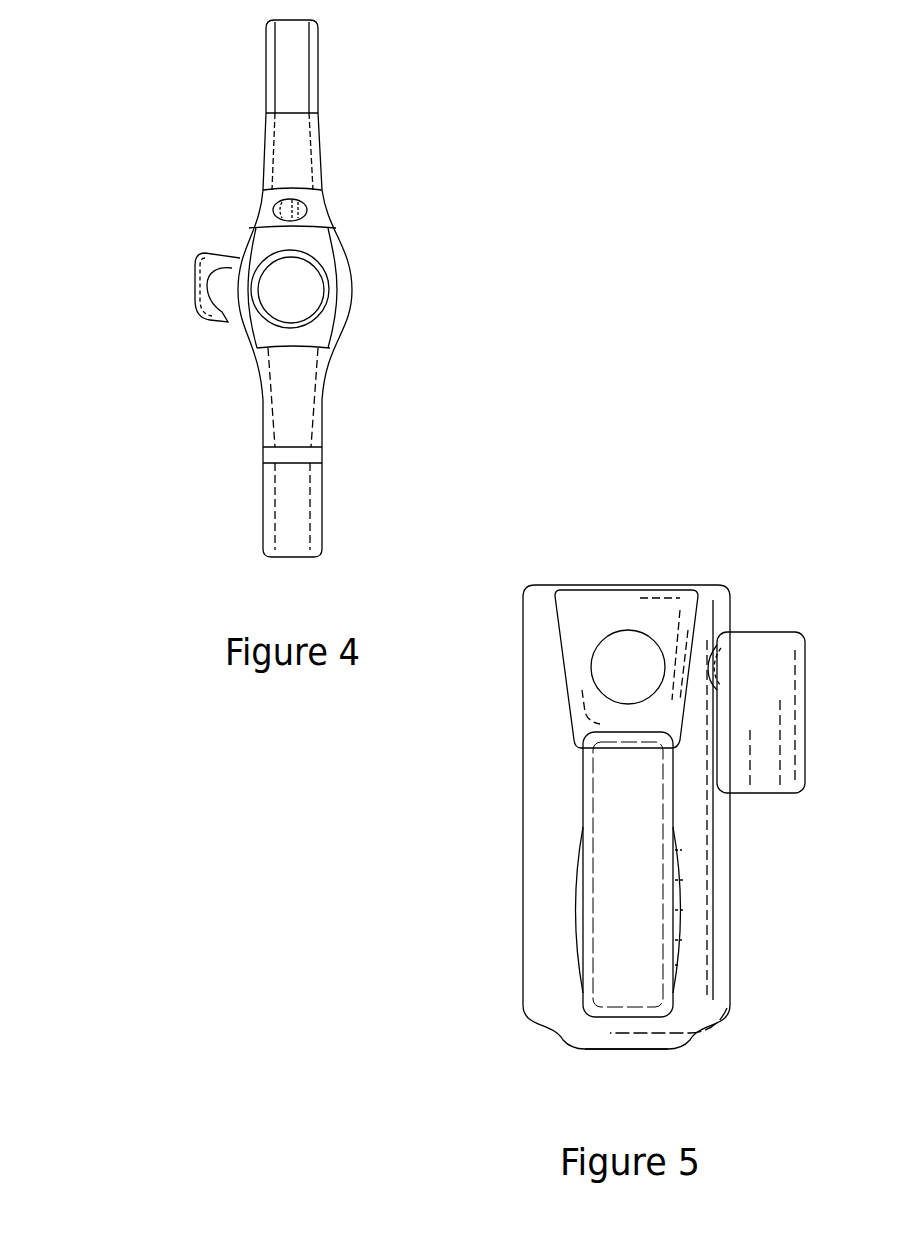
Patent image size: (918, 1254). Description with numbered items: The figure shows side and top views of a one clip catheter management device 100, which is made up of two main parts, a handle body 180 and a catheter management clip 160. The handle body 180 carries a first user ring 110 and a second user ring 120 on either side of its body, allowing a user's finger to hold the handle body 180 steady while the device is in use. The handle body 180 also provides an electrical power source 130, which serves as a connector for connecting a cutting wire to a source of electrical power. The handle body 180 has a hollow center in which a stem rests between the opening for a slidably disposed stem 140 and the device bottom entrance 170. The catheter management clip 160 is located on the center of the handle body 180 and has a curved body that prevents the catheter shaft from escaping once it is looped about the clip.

In FIG. 4, the one clip catheter management device 100 is at (190, 148).
In FIG. 5, the one clip catheter management device 100 is at (517, 576).
In FIG. 4, the first user ring 110 is at (320, 102).
In FIG. 5, the first user ring 110 is at (622, 990).
In FIG. 4, the second user ring 120 is at (263, 505).
In FIG. 4, the electrical power source 130 is at (300, 205).
In FIG. 5, the electrical power source 130 is at (643, 642).
In FIG. 4, the opening for a slidably disposed stem 140 is at (335, 302).
In FIG. 5, the opening for a slidably disposed stem 140 is at (642, 585).
In FIG. 5, the catheter management clip 160 is at (757, 640).
In FIG. 5, the device bottom entrance 170 is at (650, 1052).
In FIG. 4, the handle body 180 is at (255, 232).
In FIG. 5, the handle body 180 is at (730, 917).